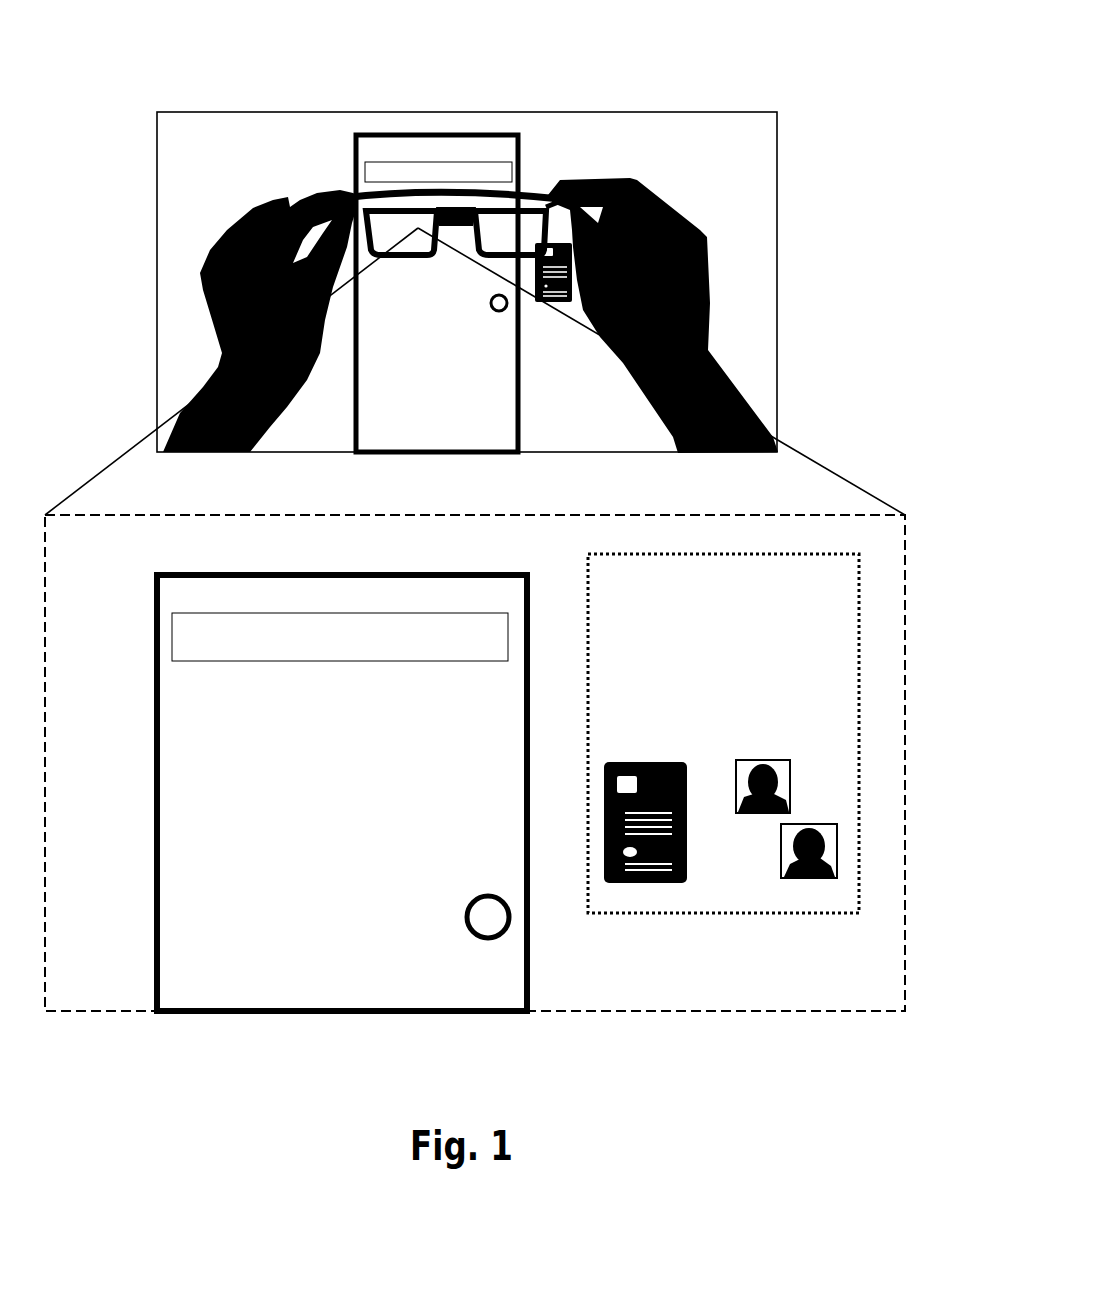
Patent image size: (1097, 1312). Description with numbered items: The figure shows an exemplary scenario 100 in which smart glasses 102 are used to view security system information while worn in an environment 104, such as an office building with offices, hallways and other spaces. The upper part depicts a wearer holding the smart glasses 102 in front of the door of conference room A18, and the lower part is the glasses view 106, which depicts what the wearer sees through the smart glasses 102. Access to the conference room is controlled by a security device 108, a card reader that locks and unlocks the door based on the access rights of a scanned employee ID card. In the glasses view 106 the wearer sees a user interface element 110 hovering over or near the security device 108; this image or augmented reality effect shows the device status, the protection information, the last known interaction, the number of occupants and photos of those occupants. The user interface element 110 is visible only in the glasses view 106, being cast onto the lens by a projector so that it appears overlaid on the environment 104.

The scenario 100 is at (486, 11).
The smart glasses 102 is at (554, 147).
The environment 104 is at (491, 277).
The glasses view 106 is at (502, 776).
The security device 108 is at (688, 822).
The user interface element 110 is at (774, 776).